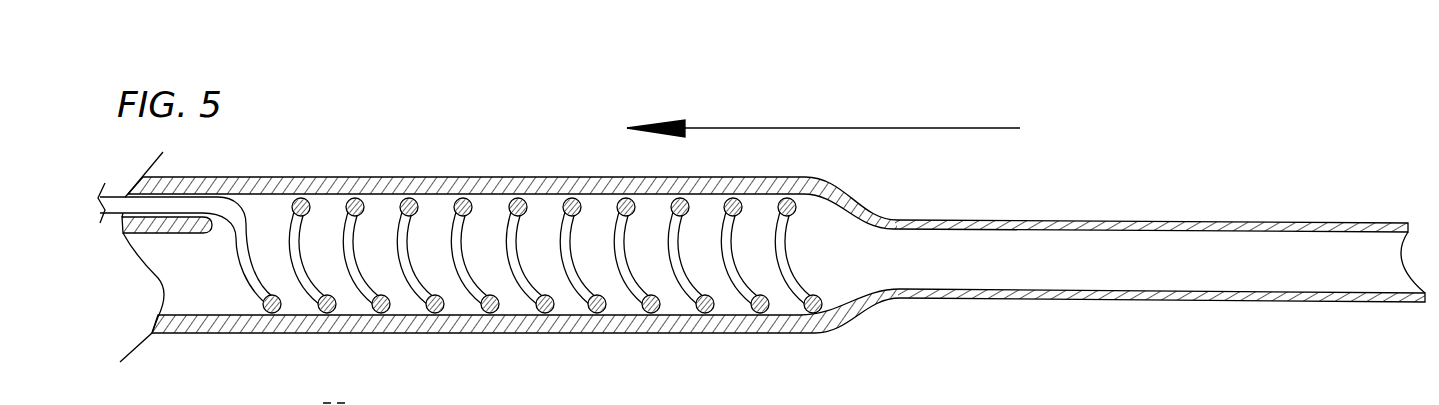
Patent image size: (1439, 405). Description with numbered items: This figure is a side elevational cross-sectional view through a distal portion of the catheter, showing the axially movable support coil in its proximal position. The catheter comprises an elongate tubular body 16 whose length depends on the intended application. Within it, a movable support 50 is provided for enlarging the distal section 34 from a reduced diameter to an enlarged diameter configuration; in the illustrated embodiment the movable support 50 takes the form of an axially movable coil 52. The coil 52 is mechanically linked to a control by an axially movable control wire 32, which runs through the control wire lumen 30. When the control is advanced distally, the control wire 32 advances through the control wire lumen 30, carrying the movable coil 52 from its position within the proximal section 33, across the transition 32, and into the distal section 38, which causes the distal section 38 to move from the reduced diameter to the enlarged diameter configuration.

The elongate tubular body 16 is at (445, 187).
The control wire lumen 30 is at (152, 197).
The control wire 32 is at (178, 205).
The proximal section 33 is at (388, 72).
The distal section 34 is at (1125, 127).
The distal section 38 is at (198, 297).
The movable support 50 is at (510, 245).
The axially movable coil 52 is at (571, 200).